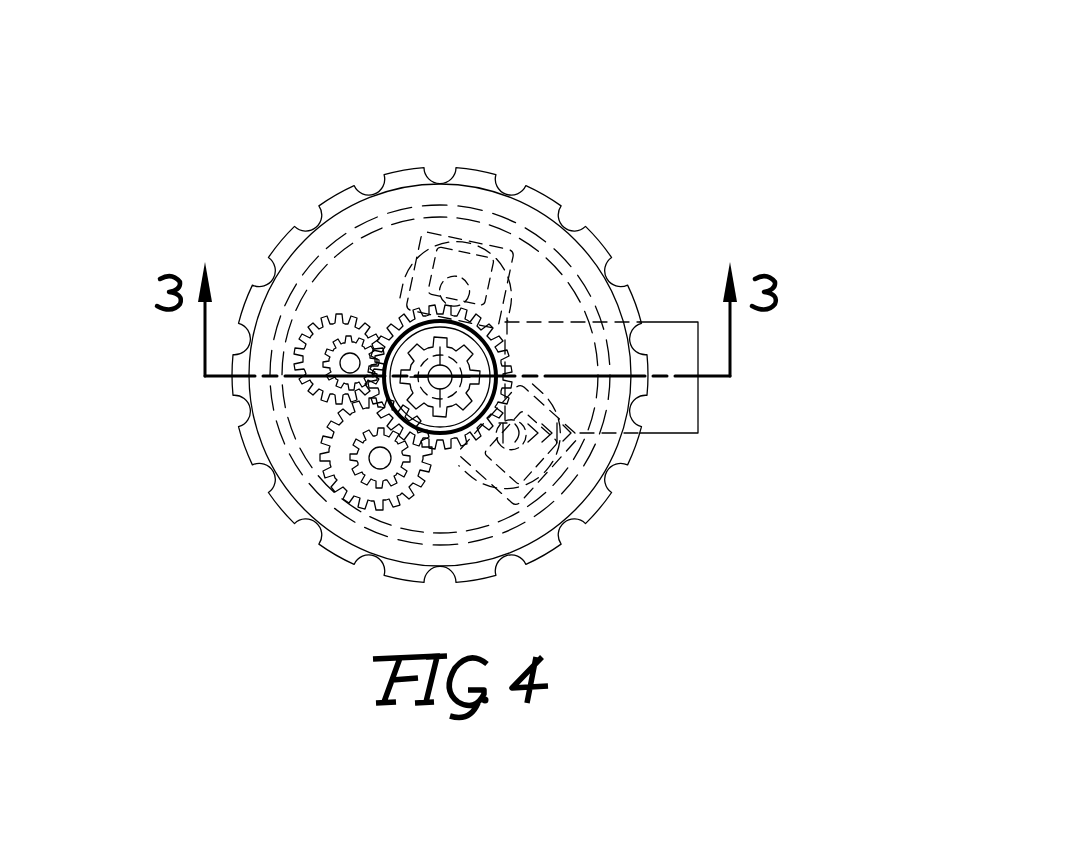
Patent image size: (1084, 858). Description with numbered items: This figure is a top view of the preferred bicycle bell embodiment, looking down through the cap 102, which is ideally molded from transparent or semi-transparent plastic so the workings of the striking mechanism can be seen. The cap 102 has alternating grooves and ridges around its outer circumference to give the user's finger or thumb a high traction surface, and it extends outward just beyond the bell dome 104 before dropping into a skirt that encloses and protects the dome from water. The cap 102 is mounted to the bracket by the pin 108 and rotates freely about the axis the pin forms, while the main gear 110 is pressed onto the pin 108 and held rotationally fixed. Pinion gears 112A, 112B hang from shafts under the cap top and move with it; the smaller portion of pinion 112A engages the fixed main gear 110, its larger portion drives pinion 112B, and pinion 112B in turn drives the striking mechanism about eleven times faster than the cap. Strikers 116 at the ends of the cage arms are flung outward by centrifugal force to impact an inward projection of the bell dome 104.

The cap 102 is at (640, 458).
The bell dome 104 is at (573, 270).
The pin 108 is at (450, 432).
The main gear 110 is at (390, 313).
The pinion gear 112A is at (327, 460).
The pinion gear 112B is at (317, 320).
The striker 116 is at (463, 240).